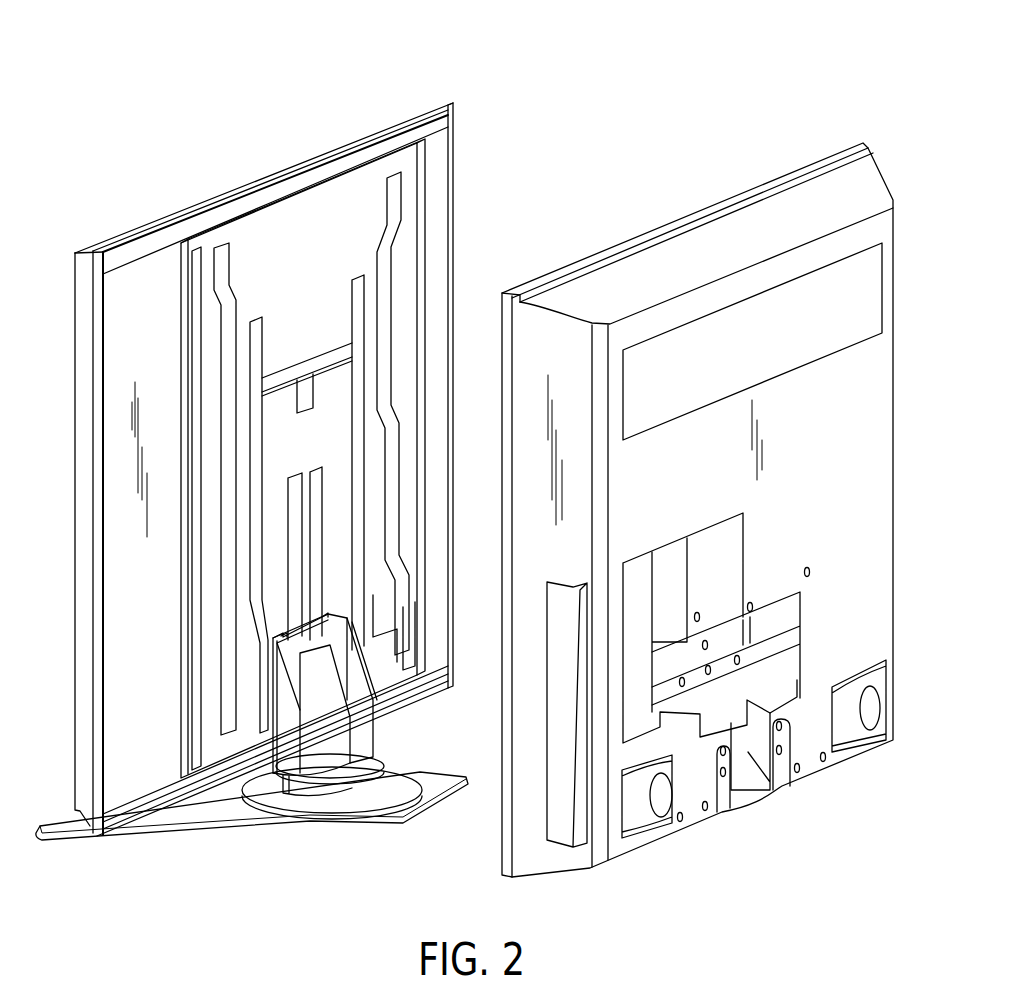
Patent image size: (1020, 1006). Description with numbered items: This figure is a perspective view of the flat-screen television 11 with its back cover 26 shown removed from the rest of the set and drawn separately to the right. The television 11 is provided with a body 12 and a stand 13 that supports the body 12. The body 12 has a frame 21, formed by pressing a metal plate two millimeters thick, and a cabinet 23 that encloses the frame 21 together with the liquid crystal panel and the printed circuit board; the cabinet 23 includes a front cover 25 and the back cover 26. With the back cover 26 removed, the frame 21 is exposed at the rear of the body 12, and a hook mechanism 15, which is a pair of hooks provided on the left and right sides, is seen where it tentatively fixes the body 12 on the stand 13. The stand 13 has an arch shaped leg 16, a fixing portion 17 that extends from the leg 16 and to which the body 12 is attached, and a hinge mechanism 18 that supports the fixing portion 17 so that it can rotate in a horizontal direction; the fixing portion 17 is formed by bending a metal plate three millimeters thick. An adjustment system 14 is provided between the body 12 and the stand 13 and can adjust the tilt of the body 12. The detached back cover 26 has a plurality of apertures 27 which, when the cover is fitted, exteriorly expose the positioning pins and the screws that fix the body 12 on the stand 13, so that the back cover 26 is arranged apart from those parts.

The flat-screen television 11 is at (298, 75).
The body 12 is at (241, 170).
The stand 13 is at (198, 854).
The adjustment system 14 is at (400, 729).
The hook mechanism 15 is at (331, 617).
The leg 16 is at (251, 806).
The fixing portion 17 is at (287, 770).
The hinge mechanism 18 is at (351, 792).
The frame 21 is at (352, 192).
The cabinet 23 is at (148, 231).
The front cover 25 is at (80, 291).
The back cover 26 is at (680, 246).
The apertures 27 is at (736, 658).